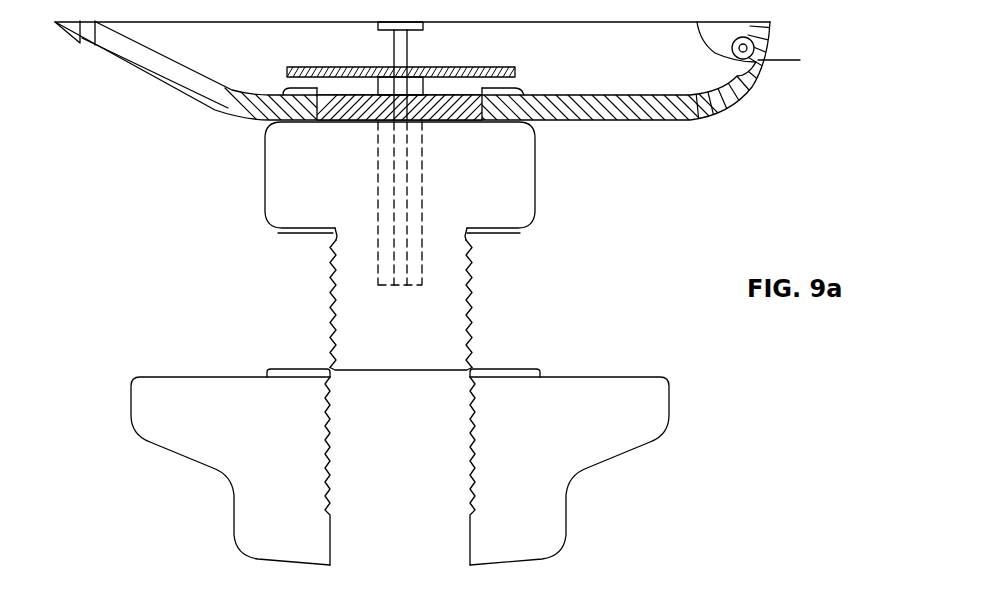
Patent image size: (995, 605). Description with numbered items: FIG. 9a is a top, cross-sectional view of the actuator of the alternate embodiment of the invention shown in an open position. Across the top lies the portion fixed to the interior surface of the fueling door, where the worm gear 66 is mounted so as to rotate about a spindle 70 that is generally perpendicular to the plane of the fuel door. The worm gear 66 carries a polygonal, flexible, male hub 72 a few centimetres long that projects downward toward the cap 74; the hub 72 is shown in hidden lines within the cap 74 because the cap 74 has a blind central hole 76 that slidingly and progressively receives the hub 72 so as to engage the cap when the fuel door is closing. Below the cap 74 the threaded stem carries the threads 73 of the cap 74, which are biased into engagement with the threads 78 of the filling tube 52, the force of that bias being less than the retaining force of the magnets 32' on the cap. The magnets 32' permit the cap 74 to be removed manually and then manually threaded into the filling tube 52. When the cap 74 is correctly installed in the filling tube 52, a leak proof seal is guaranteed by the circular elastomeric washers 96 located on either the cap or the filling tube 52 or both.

The magnets 32' is at (387, 120).
The filling tube 52 is at (400, 399).
The worm gear 66 is at (308, 67).
The spindle 70 is at (482, 153).
The hub 72 is at (346, 301).
The threads 73 is at (330, 297).
The cap 74 is at (510, 165).
The blind central hole 76 is at (422, 176).
The threads 78 is at (325, 410).
The circular elastomeric washers 96 is at (498, 370).